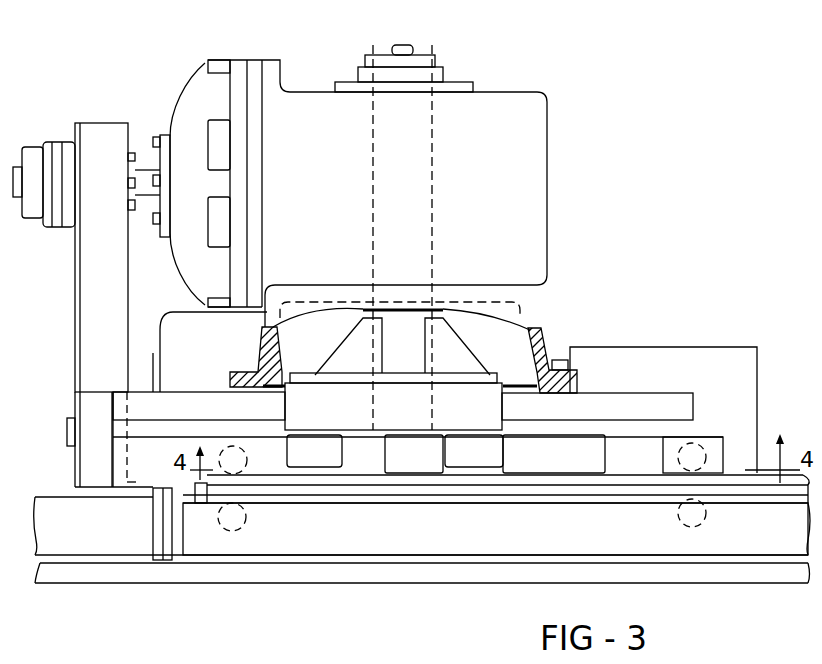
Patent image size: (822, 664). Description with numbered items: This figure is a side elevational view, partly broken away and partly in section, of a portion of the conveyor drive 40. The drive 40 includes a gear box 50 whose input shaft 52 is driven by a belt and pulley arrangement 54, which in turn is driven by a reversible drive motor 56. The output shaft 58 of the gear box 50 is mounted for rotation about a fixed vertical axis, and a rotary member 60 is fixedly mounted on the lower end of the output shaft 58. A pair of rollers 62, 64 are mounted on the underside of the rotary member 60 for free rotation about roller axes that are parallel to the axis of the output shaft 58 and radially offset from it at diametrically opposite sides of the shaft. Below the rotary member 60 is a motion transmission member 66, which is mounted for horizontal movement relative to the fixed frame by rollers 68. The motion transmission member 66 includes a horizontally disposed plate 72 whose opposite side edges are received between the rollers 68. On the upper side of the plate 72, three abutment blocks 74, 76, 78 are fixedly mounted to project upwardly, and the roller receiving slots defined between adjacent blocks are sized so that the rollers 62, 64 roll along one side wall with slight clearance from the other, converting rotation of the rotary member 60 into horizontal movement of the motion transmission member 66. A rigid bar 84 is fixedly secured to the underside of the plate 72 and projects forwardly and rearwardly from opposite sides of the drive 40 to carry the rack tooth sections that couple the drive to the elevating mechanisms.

The drive 40 is at (630, 107).
The gear box 50 is at (298, 108).
The input shaft 52 is at (143, 173).
The belt and pulley arrangement 54 is at (78, 293).
The reversible drive motor 56 is at (177, 328).
The output shaft 58 is at (403, 332).
The rotary member 60 is at (345, 414).
The roller 62 is at (470, 458).
The roller 64 is at (305, 460).
The motion transmission member 66 is at (192, 527).
The rollers 68 is at (232, 446).
The plate 72 is at (363, 487).
The abutment block 74 is at (425, 467).
The abutment block 76 is at (563, 467).
The abutment block 78 is at (706, 435).
The rigid bar 84 is at (52, 508).